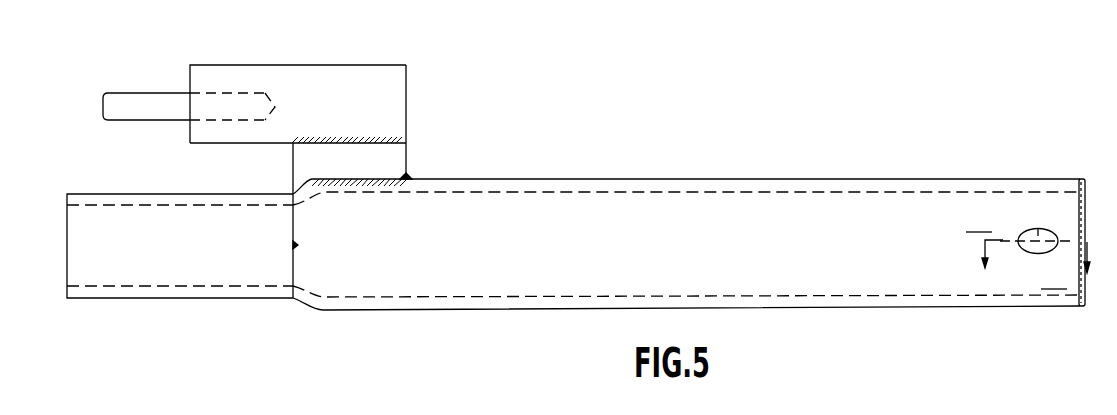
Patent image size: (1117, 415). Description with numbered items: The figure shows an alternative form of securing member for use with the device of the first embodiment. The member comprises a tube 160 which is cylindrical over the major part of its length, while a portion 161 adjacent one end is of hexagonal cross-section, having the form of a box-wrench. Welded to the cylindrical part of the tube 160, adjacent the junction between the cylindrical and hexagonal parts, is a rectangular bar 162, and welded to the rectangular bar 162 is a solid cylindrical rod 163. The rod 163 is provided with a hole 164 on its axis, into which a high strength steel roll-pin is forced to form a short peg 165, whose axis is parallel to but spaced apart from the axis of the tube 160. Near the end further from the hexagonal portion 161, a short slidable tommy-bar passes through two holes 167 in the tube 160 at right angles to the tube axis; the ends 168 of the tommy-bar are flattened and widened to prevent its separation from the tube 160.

The tube 160 is at (600, 185).
The portion of hexagonal cross-section 161 is at (225, 288).
The rectangular bar 162 is at (397, 165).
The solid cylindrical rod 163 is at (397, 92).
The hole 164 is at (190, 120).
The peg 165 is at (150, 103).
The holes 167 is at (1038, 253).
The ends of the tommy-bar 168 is at (1040, 228).